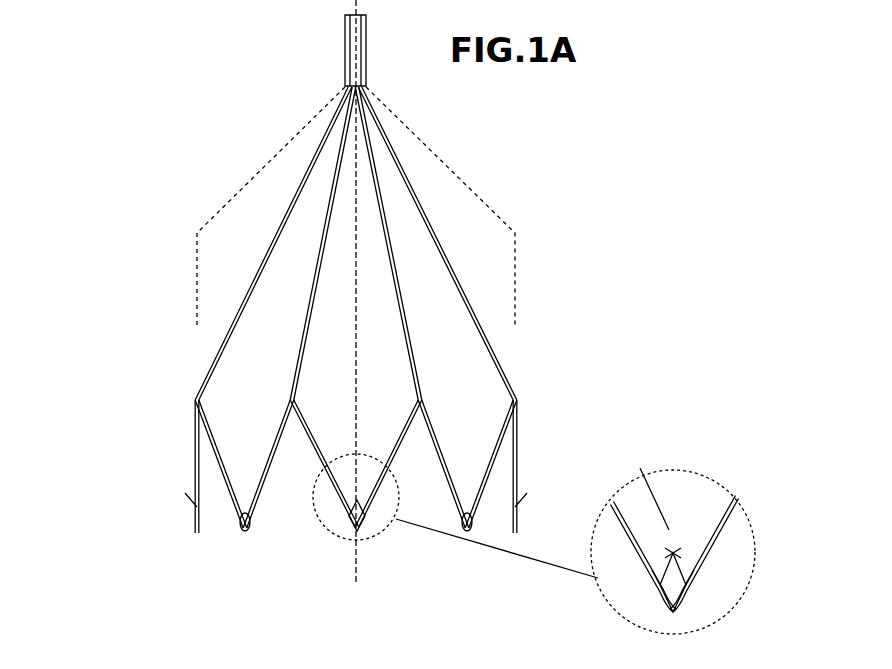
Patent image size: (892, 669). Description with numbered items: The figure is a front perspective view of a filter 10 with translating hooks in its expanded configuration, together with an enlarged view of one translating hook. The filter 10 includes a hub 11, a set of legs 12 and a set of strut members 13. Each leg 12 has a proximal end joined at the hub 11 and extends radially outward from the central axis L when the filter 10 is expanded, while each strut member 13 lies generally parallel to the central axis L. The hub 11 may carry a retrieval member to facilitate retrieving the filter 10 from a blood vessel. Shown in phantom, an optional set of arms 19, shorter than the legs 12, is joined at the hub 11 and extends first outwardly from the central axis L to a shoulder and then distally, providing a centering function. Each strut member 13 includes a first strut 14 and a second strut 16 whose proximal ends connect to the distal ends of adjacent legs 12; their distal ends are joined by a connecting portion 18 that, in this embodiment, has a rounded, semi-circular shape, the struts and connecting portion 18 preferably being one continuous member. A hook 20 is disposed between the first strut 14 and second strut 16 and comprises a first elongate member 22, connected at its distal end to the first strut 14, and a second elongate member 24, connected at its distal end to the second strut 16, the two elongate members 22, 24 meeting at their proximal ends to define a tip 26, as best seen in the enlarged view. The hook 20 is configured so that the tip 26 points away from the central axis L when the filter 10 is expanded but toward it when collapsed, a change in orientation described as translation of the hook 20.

The filter 10 is at (458, 155).
The hub 11 is at (337, 52).
The legs 12 is at (474, 292).
The strut members 13 is at (190, 461).
The first strut 14 is at (318, 441).
The second strut 16 is at (397, 441).
The connecting portion 18 is at (366, 537).
The arms 19 is at (233, 184).
The hook 20 is at (346, 492).
The first elongate member 22 is at (652, 570).
The second elongate member 24 is at (700, 570).
The tip 26 is at (675, 546).
The central axis L is at (352, 567).